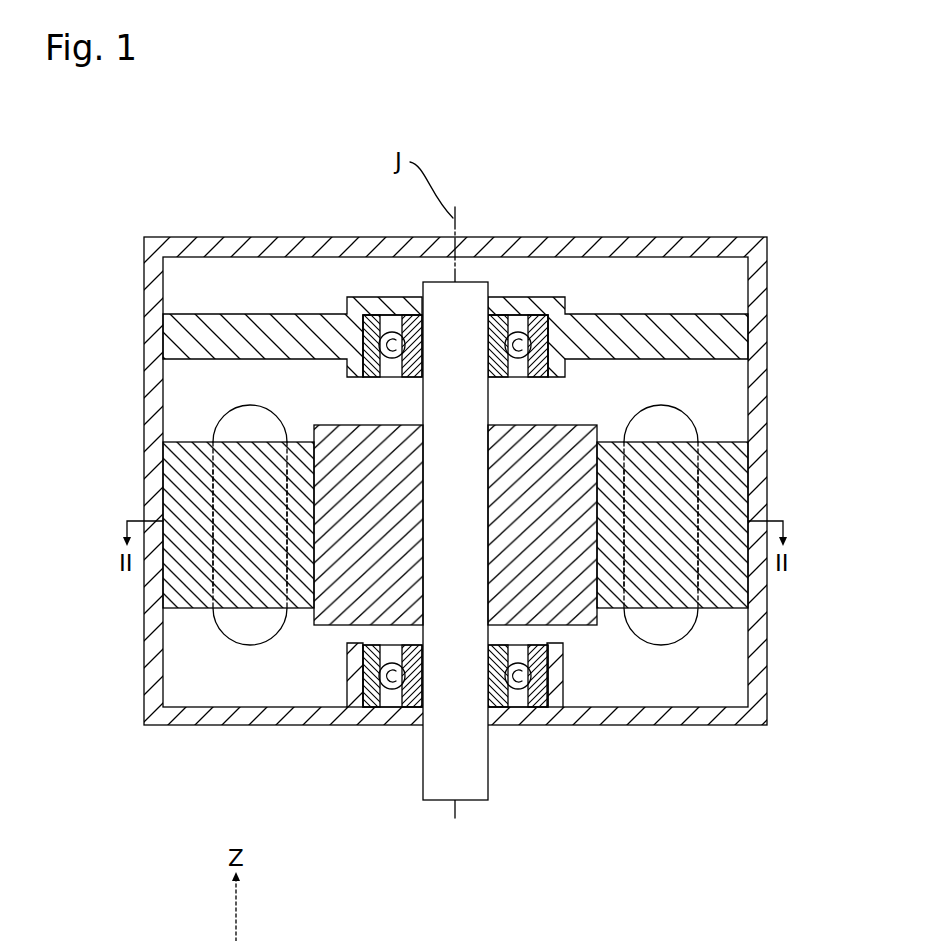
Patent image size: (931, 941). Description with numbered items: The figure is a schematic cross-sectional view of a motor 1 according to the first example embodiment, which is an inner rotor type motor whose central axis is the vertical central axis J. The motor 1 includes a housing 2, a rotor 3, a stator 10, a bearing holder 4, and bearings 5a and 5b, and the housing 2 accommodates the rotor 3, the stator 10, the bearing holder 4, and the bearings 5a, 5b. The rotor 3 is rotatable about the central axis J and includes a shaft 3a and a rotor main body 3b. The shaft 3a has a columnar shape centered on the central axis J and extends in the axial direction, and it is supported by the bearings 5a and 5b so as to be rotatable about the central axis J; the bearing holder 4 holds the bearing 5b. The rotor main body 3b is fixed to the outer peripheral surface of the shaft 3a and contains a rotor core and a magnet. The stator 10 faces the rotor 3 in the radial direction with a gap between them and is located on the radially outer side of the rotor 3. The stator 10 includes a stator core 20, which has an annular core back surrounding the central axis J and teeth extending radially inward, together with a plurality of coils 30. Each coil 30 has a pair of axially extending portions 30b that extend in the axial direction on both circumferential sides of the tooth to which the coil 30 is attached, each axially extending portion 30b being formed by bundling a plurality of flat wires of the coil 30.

The motor 1 is at (700, 182).
The housing 2 is at (730, 248).
The rotor 3 is at (447, 582).
The shaft 3a is at (480, 778).
The rotor main body 3b is at (330, 613).
The bearing holder 4 is at (733, 333).
The bearing 5a is at (515, 707).
The bearing 5b is at (517, 335).
The stator 10 is at (460, 517).
The stator core 20 is at (752, 457).
The coil 30 is at (692, 404).
The axially extending portion 30b is at (693, 497).